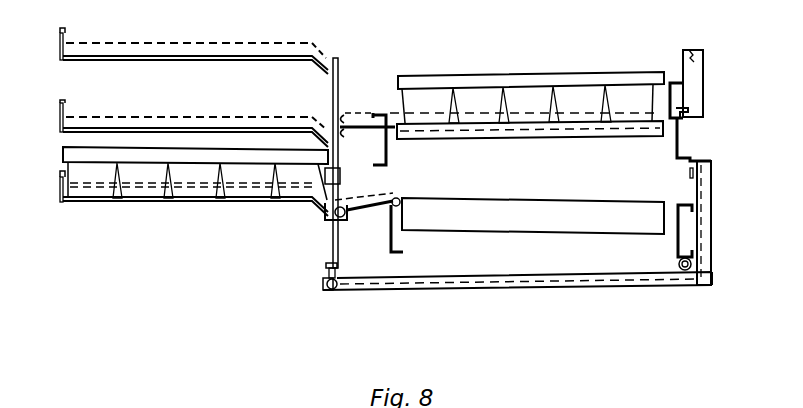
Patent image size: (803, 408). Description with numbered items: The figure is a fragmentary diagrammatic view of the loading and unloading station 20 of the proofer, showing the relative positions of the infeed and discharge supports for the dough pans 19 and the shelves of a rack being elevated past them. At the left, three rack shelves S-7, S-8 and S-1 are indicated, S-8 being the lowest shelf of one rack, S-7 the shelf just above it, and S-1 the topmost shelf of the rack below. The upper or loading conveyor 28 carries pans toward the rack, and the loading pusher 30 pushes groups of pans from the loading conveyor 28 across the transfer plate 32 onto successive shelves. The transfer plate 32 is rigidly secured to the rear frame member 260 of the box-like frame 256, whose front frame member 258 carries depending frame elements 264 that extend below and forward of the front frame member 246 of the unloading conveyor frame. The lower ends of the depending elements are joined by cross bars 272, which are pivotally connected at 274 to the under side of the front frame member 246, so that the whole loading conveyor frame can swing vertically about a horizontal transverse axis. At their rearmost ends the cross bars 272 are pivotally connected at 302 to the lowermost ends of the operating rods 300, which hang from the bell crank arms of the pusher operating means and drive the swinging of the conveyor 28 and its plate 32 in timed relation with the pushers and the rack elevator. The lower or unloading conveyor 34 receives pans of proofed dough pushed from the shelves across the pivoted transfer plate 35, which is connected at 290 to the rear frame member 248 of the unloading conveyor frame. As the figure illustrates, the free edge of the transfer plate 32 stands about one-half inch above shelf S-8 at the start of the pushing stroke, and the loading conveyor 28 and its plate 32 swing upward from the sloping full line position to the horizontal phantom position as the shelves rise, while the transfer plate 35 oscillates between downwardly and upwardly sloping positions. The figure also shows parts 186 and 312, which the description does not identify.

The loading and unloading station 20 is at (613, 29).
The rack shelf S-7 is at (60, 52).
The rack shelf S-8 is at (60, 126).
The rack shelf S-1 is at (60, 196).
The dough pan 19 is at (63, 154).
The loading conveyor 28 is at (545, 133).
The operating rod 300 is at (338, 70).
The transfer plate 32 is at (359, 122).
The rear frame member 260 is at (388, 156).
The loading pusher 30 is at (706, 62).
The bracket 186 is at (674, 99).
The front frame member 258 is at (673, 146).
The depending frame element 264 is at (706, 233).
The unloading conveyor 34 is at (588, 200).
The front frame member 246 is at (676, 241).
The pivotal connection 274 is at (683, 272).
The box-like frame 256 is at (521, 284).
The cross bar 272 is at (419, 288).
The pivotal connection 302 is at (331, 291).
The joint block 312 is at (332, 180).
The pivotal connection 290 is at (392, 204).
The transfer plate 35 is at (372, 196).
The rear frame member 248 is at (392, 226).